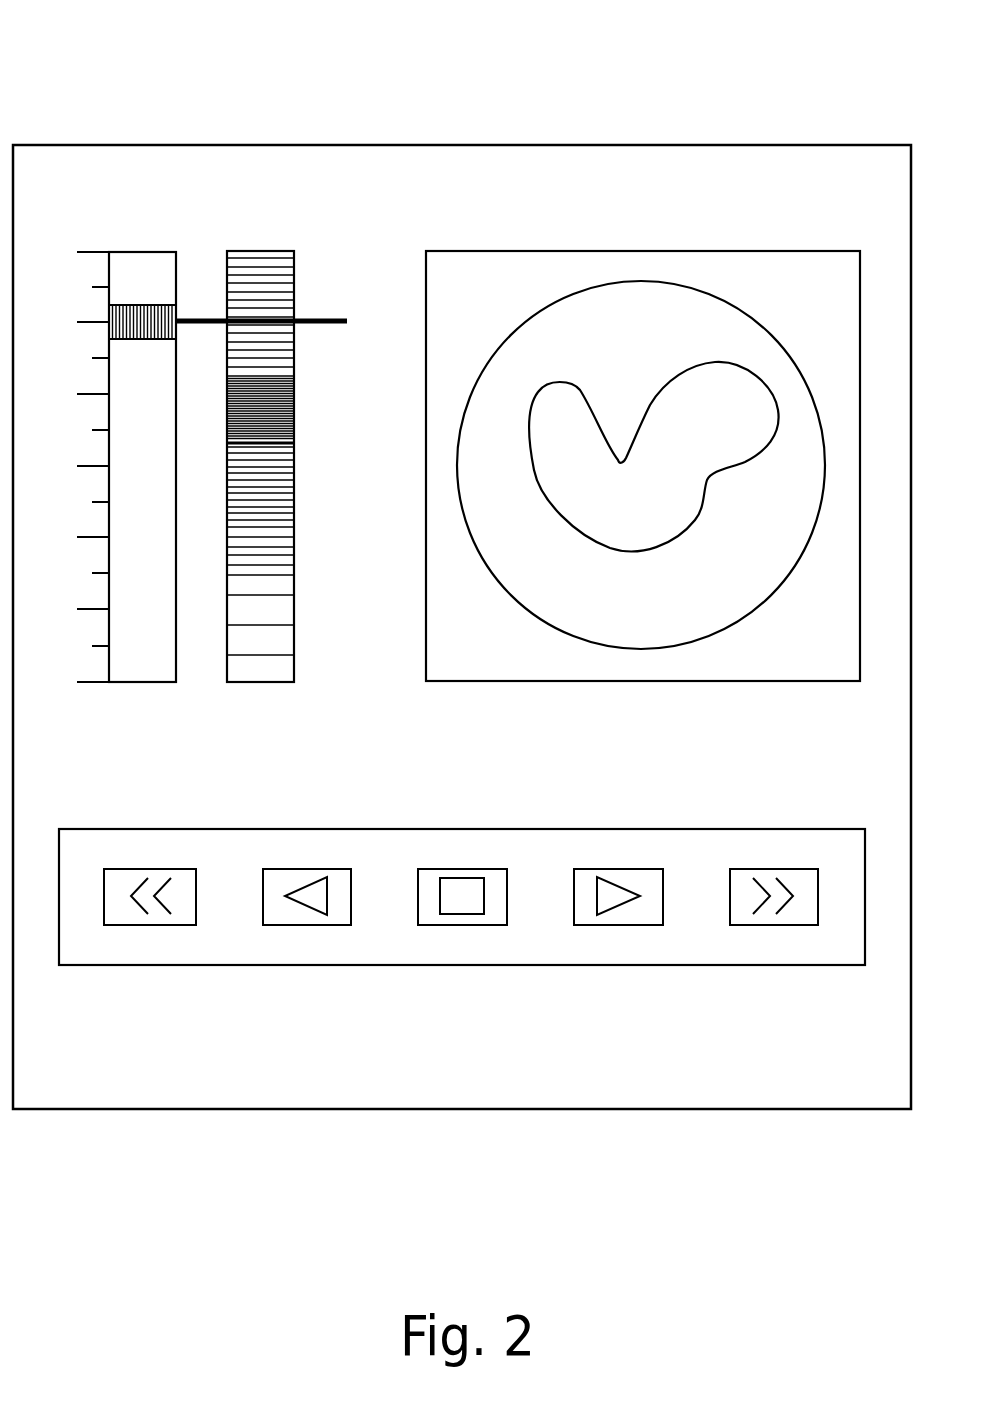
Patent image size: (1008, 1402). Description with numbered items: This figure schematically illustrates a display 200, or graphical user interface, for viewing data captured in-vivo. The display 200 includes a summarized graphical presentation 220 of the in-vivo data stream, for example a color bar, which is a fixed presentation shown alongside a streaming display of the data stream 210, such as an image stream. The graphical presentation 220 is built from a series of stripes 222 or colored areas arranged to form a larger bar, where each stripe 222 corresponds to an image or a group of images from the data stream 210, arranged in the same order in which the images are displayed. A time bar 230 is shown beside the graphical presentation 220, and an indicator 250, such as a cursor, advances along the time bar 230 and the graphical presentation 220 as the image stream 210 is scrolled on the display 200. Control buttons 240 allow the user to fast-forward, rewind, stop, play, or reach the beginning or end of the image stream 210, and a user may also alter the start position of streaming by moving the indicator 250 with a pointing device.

The display 200 is at (208, 101).
The data stream 210 is at (640, 250).
The graphical presentation 220 is at (312, 459).
The stripes 222 is at (273, 274).
The time bar 230 is at (142, 250).
The control buttons 240 is at (460, 966).
The indicator 250 is at (318, 328).